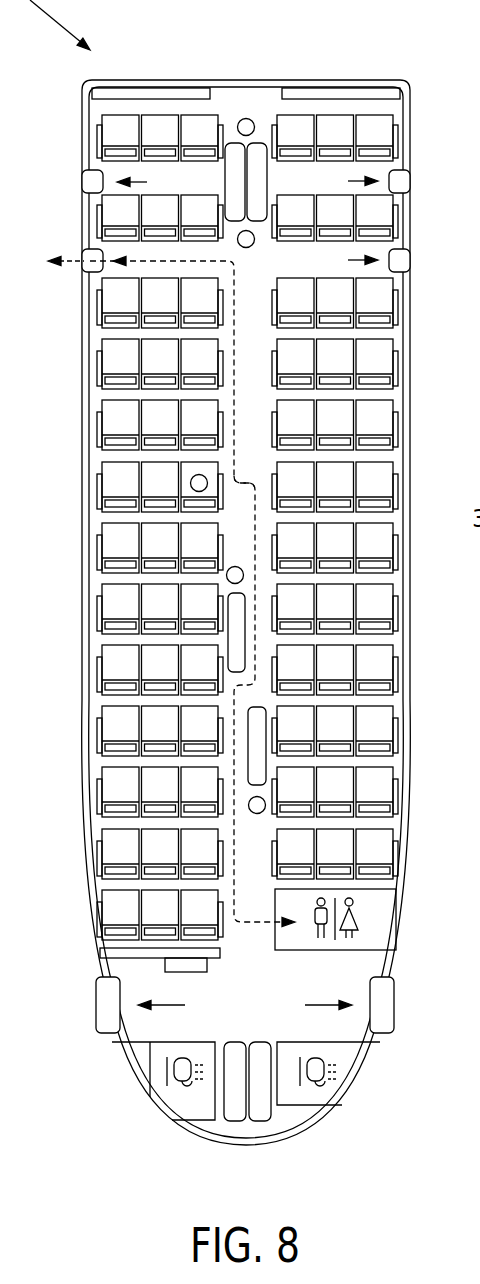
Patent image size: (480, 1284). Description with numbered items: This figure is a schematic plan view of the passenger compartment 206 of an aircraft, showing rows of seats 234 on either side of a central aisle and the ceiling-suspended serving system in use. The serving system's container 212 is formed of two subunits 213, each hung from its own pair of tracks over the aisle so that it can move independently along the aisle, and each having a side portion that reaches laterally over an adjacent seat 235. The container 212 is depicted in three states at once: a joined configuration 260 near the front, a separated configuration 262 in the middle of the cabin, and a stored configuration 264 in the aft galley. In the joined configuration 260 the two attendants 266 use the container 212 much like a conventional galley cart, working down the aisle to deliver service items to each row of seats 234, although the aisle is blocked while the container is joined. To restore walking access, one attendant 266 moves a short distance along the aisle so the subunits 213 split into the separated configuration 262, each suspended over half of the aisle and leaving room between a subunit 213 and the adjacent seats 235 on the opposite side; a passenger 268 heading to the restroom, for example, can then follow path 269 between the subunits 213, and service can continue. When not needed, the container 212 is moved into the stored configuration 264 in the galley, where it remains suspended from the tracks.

The passenger compartment 206 is at (232, 101).
The container 212 is at (235, 170).
The subunit 213 is at (236, 640).
The seats 234 is at (115, 293).
The adjacent seat 235 is at (198, 297).
The joined configuration 260 is at (283, 176).
The separated configuration 262 is at (266, 686).
The stored configuration 264 is at (267, 1024).
The attendants 266 is at (250, 120).
The passenger 268 is at (190, 486).
The path 269 is at (253, 924).